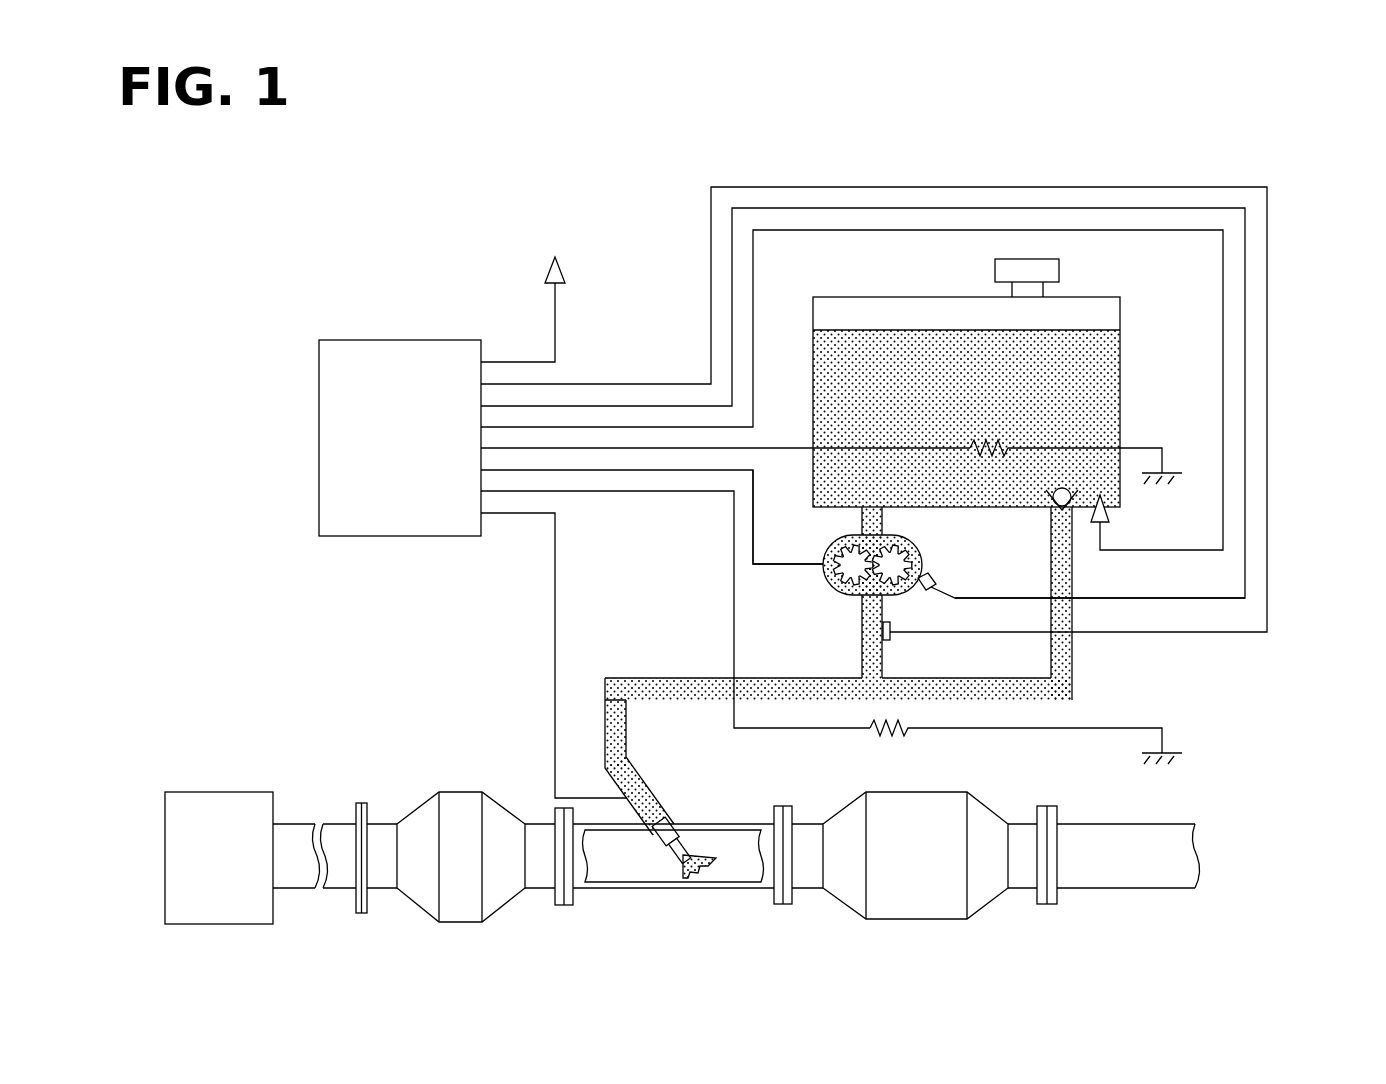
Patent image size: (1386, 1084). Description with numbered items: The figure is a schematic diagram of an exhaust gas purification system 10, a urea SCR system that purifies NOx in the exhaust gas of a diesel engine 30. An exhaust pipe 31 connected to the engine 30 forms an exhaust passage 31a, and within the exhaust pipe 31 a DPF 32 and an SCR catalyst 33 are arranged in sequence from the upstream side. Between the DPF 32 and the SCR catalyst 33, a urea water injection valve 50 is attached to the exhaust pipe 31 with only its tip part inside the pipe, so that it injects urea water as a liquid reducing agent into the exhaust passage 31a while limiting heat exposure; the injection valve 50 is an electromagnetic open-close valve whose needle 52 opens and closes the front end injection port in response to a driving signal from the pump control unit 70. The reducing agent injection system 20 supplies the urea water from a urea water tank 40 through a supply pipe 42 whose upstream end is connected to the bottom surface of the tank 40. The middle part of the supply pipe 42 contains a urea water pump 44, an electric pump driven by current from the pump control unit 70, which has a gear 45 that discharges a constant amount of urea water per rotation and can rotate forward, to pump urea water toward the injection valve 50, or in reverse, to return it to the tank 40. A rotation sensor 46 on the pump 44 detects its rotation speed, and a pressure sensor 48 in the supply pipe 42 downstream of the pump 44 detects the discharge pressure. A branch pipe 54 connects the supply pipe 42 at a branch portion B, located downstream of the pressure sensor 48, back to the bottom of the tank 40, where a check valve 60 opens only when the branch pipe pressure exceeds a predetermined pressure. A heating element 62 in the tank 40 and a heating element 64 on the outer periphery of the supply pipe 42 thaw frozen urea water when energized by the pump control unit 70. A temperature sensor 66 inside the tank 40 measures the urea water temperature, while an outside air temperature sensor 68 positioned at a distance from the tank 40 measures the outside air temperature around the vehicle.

The exhaust gas purification system 10 is at (1305, 188).
The reducing agent injection system 20 is at (1287, 332).
The engine 30 is at (240, 792).
The exhaust pipe 31 is at (637, 890).
The exhaust passage 31a is at (730, 830).
The DPF 32 is at (460, 792).
The SCR catalyst 33 is at (930, 792).
The urea water tank 40 is at (1094, 297).
The supply pipe 42 is at (862, 522).
The urea water pump 44 is at (921, 541).
The gear 45 is at (820, 554).
The rotation sensor 46 is at (932, 573).
The pressure sensor 48 is at (891, 630).
The urea water injection valve 50 is at (649, 774).
The needle 52 is at (664, 804).
The branch pipe 54 is at (1072, 576).
The check valve 60 is at (1050, 504).
The heating element 62 is at (970, 454).
The heating element 64 is at (870, 730).
The temperature sensor 66 is at (1108, 522).
The outside air temperature sensor 68 is at (548, 274).
The pump control unit 70 is at (457, 337).
The branch portion B is at (896, 672).